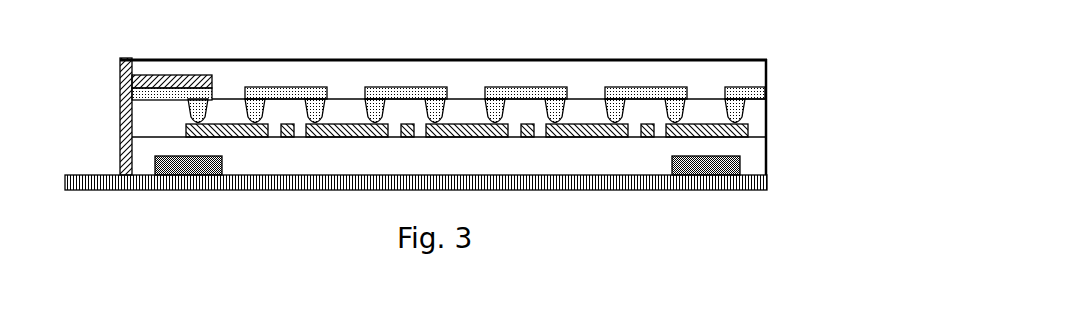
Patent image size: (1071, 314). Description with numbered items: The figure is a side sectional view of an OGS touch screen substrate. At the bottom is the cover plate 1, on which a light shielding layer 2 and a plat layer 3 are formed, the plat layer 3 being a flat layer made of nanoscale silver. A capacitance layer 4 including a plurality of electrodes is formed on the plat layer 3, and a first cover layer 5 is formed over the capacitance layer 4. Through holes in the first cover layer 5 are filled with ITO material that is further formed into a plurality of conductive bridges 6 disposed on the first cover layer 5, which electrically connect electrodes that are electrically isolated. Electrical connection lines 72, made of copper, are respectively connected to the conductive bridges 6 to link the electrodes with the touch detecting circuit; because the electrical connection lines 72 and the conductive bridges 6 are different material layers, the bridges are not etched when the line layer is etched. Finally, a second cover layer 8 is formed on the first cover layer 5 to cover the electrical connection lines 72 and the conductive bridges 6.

The cover plate 1 is at (92, 175).
The light shielding layer 2 is at (740, 163).
The plat layer 3 is at (753, 147).
The capacitance layer 4 is at (697, 128).
The first cover layer 5 is at (753, 112).
The conductive bridge 6 is at (648, 87).
The second cover layer 8 is at (753, 80).
The electrical connection line 72 is at (122, 120).